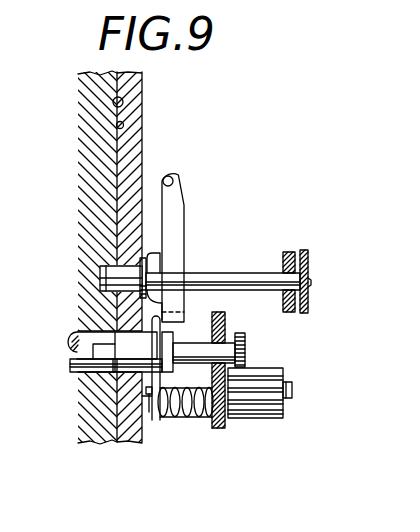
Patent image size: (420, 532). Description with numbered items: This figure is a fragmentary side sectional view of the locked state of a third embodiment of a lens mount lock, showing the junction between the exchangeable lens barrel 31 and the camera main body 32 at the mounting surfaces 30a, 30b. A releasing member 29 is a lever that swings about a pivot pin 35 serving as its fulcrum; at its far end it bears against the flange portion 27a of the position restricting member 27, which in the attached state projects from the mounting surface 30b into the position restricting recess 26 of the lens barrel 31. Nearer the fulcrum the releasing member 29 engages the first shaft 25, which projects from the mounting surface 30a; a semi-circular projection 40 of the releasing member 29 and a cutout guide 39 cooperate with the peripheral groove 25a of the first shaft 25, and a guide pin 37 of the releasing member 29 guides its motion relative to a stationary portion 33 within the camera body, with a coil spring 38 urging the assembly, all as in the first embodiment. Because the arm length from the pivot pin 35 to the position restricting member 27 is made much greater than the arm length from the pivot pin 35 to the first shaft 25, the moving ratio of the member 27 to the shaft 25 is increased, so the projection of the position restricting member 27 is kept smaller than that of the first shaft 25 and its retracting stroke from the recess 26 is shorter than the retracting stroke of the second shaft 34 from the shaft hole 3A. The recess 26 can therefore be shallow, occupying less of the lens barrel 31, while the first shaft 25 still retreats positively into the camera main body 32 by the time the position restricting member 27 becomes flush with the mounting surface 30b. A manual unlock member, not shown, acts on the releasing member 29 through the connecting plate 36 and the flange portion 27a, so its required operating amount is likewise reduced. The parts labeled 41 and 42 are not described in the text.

The shaft hole 3A is at (70, 342).
The first shaft 25 is at (162, 336).
The peripheral groove 25a is at (176, 333).
The position restricting recess 26 is at (140, 292).
The position restricting member 27 is at (242, 271).
The flange portion 27a is at (100, 278).
The releasing member 29 is at (187, 206).
The mounting surface 30a is at (123, 103).
The mounting surface 30b is at (116, 125).
The exchangeable lens barrel 31 is at (80, 444).
The camera main body 32 is at (121, 444).
The stationary portion 33 is at (216, 429).
The second shaft 34 is at (78, 360).
The pivot pin 35 is at (172, 176).
The connecting plate 36 is at (304, 251).
The guide pin 37 is at (150, 414).
The coil spring 38 is at (190, 419).
The cutout guide 39 is at (140, 392).
The semi-circular projection 40 is at (150, 266).
The motor 41 is at (268, 419).
The gear 42 is at (246, 350).